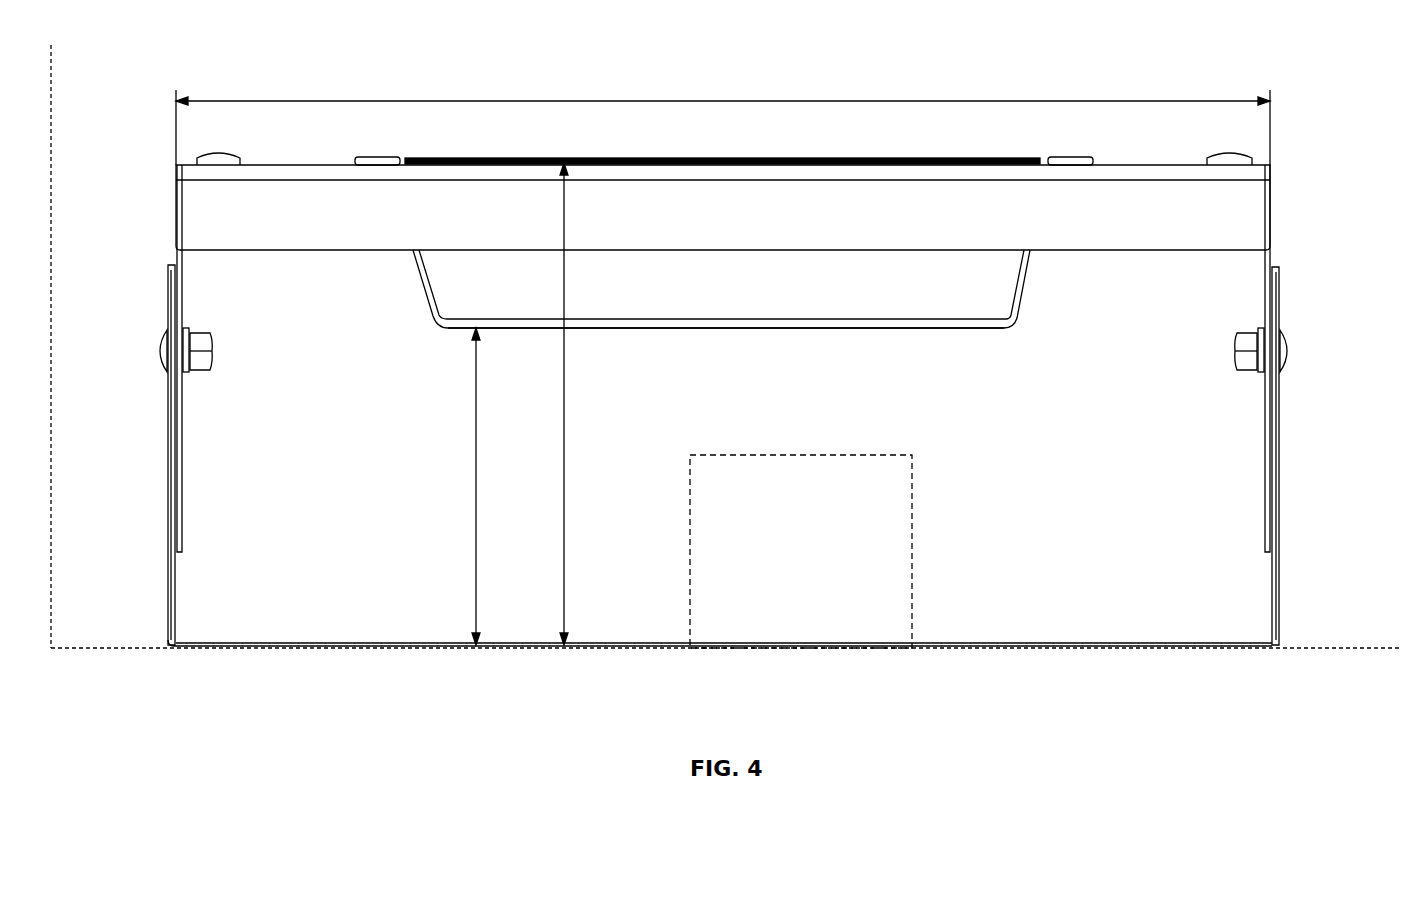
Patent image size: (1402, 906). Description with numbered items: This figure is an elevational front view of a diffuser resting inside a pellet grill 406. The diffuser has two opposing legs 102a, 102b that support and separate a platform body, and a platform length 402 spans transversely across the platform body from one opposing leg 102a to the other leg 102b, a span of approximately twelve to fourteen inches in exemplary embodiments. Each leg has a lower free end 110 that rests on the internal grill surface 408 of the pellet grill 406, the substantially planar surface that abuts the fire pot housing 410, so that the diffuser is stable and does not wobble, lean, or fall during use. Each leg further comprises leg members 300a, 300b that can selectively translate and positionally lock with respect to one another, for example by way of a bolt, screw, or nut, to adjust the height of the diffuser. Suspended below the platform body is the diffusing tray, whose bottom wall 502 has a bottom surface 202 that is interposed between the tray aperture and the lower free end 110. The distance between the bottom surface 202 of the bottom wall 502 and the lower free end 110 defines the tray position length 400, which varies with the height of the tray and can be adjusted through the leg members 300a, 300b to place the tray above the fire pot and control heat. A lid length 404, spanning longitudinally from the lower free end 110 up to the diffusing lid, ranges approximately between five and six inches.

The pellet grill 406 is at (51, 90).
The internal grill surface 408 is at (56, 646).
The platform length 402 is at (723, 117).
The lower free end 110 is at (178, 644).
The leg member 300a is at (168, 592).
The leg member 300b is at (1279, 597).
The opposing leg 102a is at (168, 416).
The opposing leg 102b is at (1279, 416).
The bottom wall 502 is at (763, 320).
The bottom surface 202 is at (656, 331).
The lid length 404 is at (564, 548).
The tray position length 400 is at (476, 520).
The fire pot housing 410 is at (913, 497).